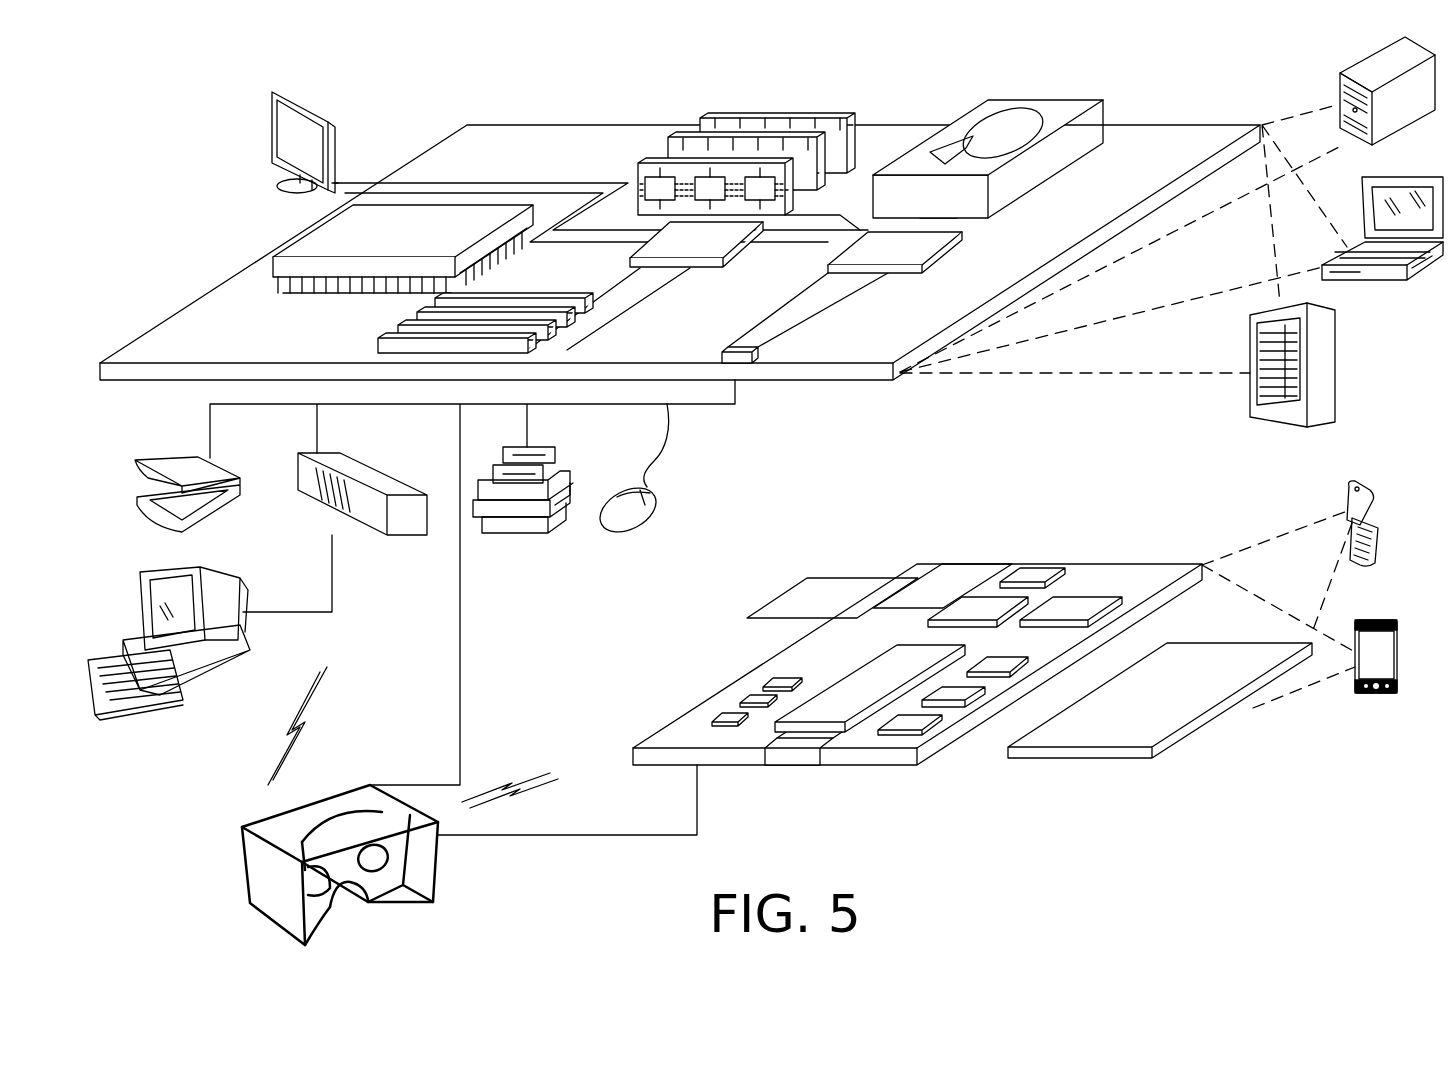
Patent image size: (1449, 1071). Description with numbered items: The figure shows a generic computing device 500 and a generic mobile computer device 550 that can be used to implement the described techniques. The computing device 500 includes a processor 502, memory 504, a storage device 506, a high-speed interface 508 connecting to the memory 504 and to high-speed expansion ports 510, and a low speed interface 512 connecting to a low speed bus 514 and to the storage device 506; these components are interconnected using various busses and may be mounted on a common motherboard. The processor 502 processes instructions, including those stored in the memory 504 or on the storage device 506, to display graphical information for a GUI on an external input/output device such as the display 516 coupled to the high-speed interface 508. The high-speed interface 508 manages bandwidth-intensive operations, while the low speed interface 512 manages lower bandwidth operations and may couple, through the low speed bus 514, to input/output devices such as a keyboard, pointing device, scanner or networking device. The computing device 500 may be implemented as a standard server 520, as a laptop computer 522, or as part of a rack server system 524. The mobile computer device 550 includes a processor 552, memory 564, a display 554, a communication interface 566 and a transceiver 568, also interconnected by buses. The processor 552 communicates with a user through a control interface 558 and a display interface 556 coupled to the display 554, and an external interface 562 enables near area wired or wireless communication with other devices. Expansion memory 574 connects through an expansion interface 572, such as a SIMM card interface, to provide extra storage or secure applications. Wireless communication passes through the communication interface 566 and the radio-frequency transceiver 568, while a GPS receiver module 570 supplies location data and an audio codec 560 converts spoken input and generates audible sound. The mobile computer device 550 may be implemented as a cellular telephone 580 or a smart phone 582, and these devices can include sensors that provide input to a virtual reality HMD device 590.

The computing device 500 is at (412, 68).
The processor 502 is at (300, 238).
The memory 504 is at (787, 118).
The storage device 506 is at (1035, 100).
The high-speed interface 508 is at (713, 235).
The high-speed expansion ports 510 is at (405, 318).
The low speed interface 512 is at (866, 240).
The low speed bus 514 is at (743, 345).
The display 516 is at (275, 95).
The standard server 520 is at (1362, 70).
The laptop computer 522 is at (1420, 178).
The rack server system 524 is at (1335, 365).
The mobile computer device 550 is at (1250, 760).
The processor 552 is at (835, 695).
The display 554 is at (1200, 657).
The display interface 556 is at (920, 720).
The control interface 558 is at (965, 690).
The audio codec 560 is at (1005, 660).
The external interface 562 is at (795, 750).
The memory 564 is at (745, 700).
The communication interface 566 is at (978, 602).
The transceiver 568 is at (1077, 605).
The GPS receiver module 570 is at (1035, 575).
The expansion interface 572 is at (896, 578).
The expansion memory 574 is at (808, 578).
The cellular telephone 580 is at (1357, 482).
The smart phone 582 is at (1368, 620).
The HMD device 590 is at (452, 848).